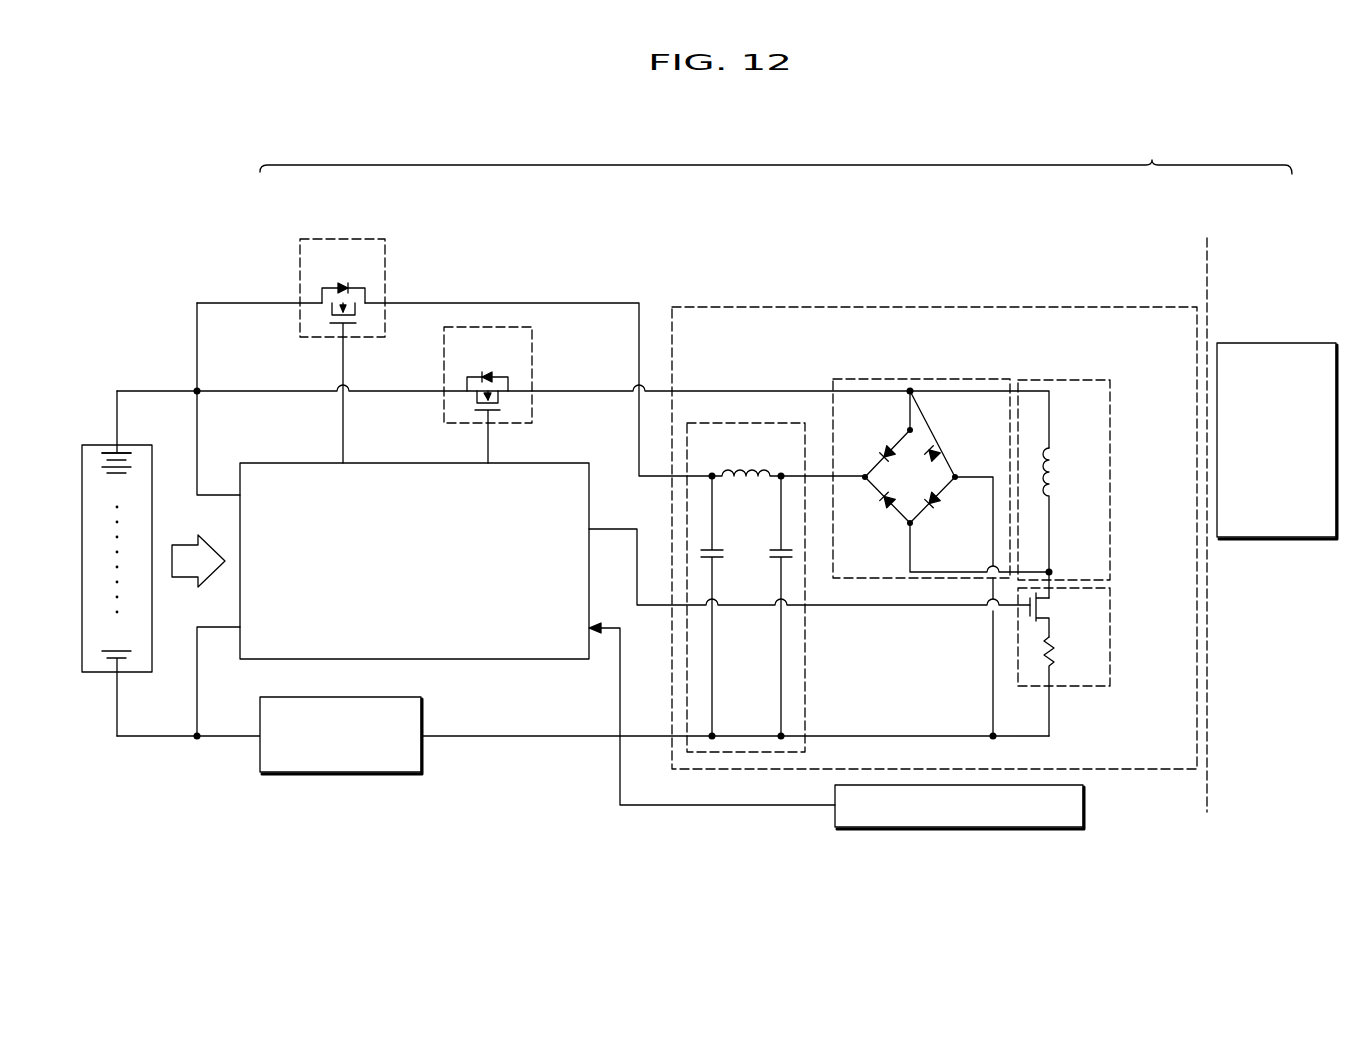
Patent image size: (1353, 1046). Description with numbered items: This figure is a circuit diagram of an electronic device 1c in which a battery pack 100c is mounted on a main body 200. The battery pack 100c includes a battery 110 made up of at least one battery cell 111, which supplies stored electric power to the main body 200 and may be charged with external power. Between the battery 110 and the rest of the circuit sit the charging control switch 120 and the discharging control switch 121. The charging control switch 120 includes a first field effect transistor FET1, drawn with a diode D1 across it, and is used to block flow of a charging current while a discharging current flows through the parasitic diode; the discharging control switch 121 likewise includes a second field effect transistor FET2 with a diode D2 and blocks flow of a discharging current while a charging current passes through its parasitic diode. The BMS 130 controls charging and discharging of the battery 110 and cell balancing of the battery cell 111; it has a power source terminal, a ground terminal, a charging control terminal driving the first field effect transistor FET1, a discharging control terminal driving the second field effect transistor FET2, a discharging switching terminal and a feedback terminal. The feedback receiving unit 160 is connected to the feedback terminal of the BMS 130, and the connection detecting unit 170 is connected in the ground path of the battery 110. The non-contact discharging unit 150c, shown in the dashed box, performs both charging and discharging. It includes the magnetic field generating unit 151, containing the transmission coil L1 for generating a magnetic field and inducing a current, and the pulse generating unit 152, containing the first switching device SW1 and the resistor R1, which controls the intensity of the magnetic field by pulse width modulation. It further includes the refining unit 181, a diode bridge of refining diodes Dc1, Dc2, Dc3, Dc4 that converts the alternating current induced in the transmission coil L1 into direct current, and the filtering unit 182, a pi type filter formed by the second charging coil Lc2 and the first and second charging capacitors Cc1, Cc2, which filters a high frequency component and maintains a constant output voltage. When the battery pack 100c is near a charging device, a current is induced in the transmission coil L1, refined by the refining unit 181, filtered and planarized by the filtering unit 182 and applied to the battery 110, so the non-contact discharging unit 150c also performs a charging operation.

The electronic device 1c is at (776, 155).
The battery pack 100c is at (281, 203).
The main body 200 is at (1278, 342).
The battery 110 is at (100, 444).
The battery cell 111 is at (127, 452).
The charging control switch 120 is at (302, 351).
The discharging control switch 121 is at (530, 395).
The BMS 130 is at (468, 661).
The non-contact discharging unit 150c is at (1080, 307).
The magnetic field generating unit 151 is at (1100, 489).
The pulse generating unit 152 is at (1100, 662).
The feedback receiving unit 160 is at (925, 828).
The connection detecting unit 170 is at (330, 773).
The refining unit 181 is at (941, 527).
The filtering unit 182 is at (776, 547).
The diode D1 is at (343, 277).
The diode D2 is at (487, 366).
The first field effect transistor FET1 is at (323, 324).
The second field effect transistor FET2 is at (500, 403).
The second charging coil Lc2 is at (788, 456).
The first charging capacitor Cc1 is at (763, 606).
The second charging capacitor Cc2 is at (729, 606).
The refining diode Dc1 is at (955, 440).
The refining diode Dc2 is at (869, 440).
The refining diode Dc3 is at (955, 514).
The refining diode Dc4 is at (869, 514).
The transmission coil L1 is at (1069, 523).
The first switching device SW1 is at (1067, 615).
The resistor R1 is at (1067, 686).